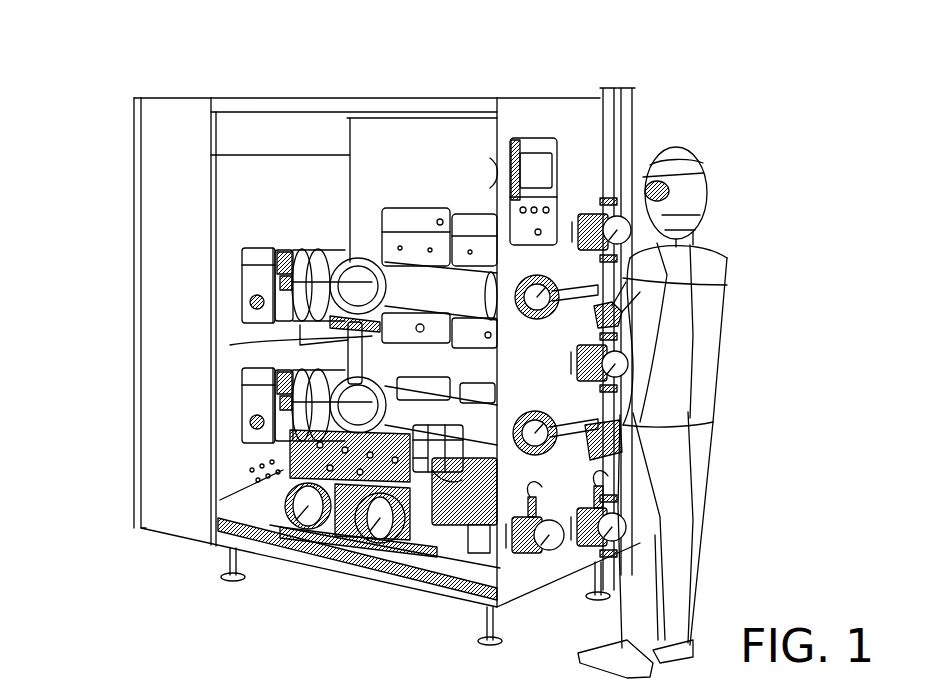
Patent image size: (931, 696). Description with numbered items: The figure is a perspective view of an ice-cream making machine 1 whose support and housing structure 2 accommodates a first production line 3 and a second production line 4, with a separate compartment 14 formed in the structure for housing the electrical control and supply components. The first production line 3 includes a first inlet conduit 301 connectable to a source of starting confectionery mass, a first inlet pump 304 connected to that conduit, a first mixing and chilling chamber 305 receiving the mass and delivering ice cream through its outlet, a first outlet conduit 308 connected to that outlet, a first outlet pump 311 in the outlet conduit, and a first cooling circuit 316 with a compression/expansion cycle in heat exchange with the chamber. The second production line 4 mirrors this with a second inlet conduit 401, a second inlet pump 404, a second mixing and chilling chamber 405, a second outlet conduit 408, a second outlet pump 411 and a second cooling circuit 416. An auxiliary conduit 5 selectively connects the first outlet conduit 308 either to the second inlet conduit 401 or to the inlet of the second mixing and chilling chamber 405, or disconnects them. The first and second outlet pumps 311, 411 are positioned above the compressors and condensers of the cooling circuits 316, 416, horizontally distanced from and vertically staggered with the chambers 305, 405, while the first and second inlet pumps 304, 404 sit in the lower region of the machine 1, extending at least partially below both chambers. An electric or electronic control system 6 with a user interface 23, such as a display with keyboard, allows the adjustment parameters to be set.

The ice-cream making machine 1 is at (106, 203).
The support and housing structure 2 is at (392, 98).
The separate compartment 14 is at (155, 148).
The first production line 3 is at (214, 428).
The second production line 4 is at (215, 302).
The auxiliary conduit 5 is at (583, 320).
The control system 6 is at (540, 136).
The user interface 23 is at (547, 167).
The first inlet conduit 301 is at (380, 537).
The first inlet pump 304 is at (553, 570).
The first mixing and chilling chamber 305 is at (315, 428).
The first outlet conduit 308 is at (632, 145).
The first outlet pump 311 is at (600, 370).
The first cooling circuit 316 is at (397, 556).
The second inlet conduit 401 is at (310, 337).
The second inlet pump 404 is at (622, 532).
The second mixing and chilling chamber 405 is at (373, 272).
The second outlet conduit 408 is at (605, 112).
The second outlet pump 411 is at (633, 232).
The second cooling circuit 416 is at (318, 476).